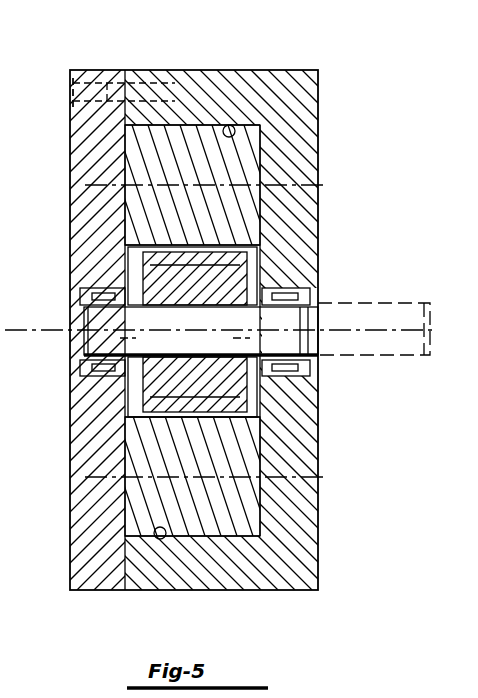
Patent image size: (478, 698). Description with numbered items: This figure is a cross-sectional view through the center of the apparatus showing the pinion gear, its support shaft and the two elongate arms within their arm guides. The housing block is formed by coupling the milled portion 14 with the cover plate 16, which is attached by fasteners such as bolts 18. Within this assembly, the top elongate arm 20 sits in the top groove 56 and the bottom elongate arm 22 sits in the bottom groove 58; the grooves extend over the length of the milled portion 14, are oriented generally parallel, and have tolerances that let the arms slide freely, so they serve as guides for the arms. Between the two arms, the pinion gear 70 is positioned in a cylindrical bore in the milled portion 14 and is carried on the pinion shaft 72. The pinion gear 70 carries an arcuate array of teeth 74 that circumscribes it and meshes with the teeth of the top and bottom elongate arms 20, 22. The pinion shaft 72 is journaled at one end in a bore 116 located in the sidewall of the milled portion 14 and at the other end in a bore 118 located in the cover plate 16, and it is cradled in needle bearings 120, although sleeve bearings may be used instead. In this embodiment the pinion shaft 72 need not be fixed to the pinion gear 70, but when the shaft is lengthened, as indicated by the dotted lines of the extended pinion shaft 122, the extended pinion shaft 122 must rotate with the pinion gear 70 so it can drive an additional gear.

The milled portion 14 is at (270, 70).
The cover plate 16 is at (103, 70).
The bolts 18 is at (68, 100).
The top elongate arm 20 is at (262, 165).
The bottom elongate arm 22 is at (260, 453).
The top groove 56 is at (223, 128).
The bottom groove 58 is at (157, 540).
The pinion gear 70 is at (125, 277).
The pinion shaft 72 is at (316, 305).
The teeth 74 is at (143, 400).
The bore 116 is at (295, 290).
The bore 118 is at (85, 378).
The needle bearings 120 is at (292, 377).
The extended pinion shaft 122 is at (318, 262).